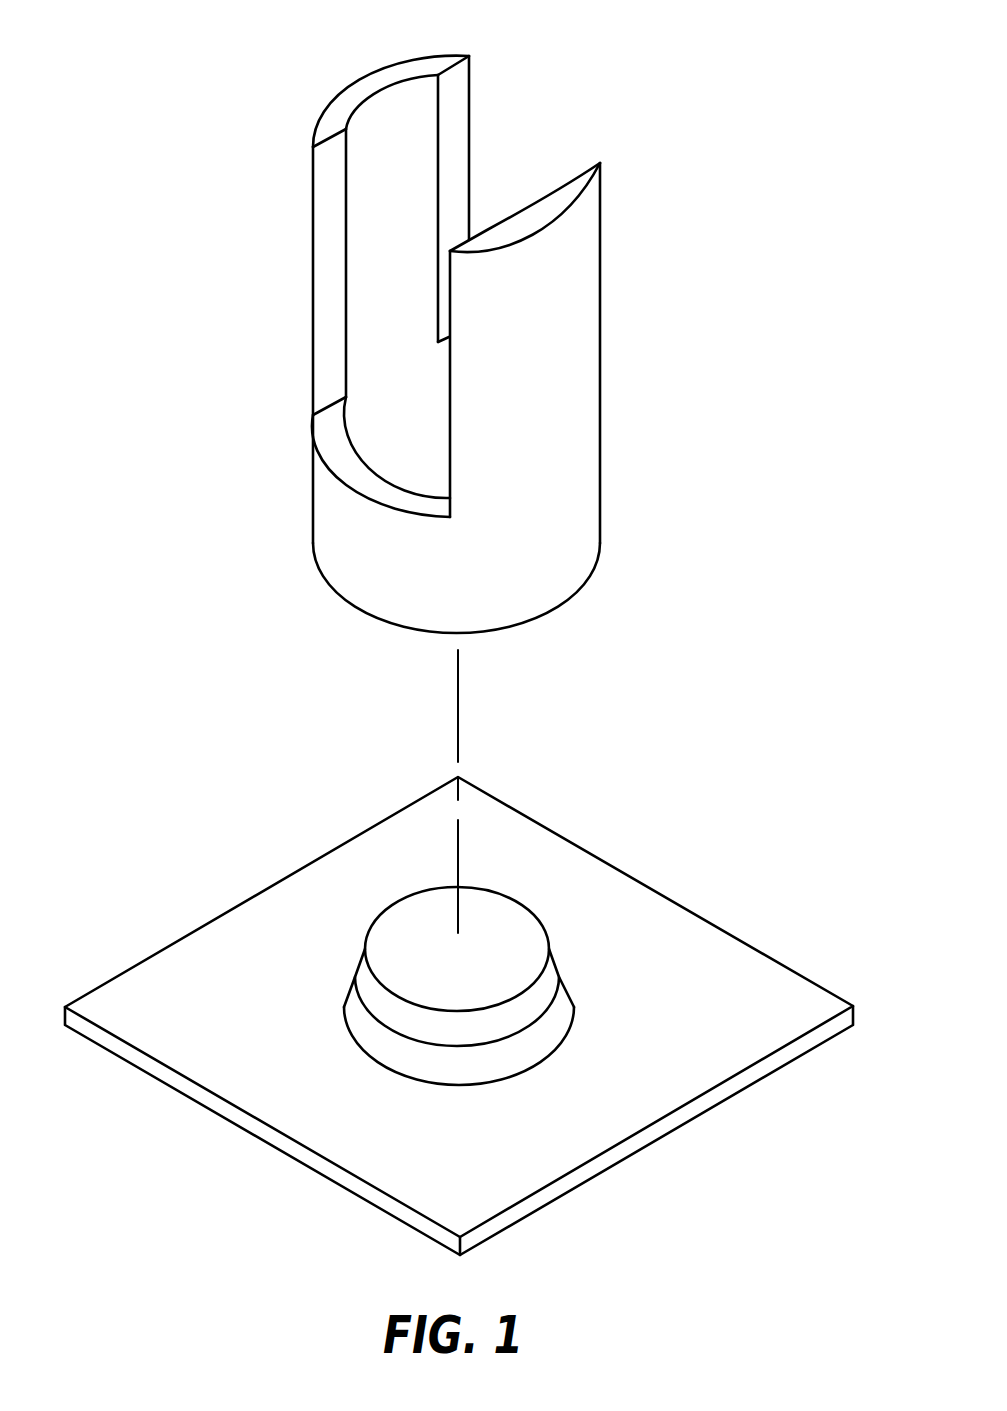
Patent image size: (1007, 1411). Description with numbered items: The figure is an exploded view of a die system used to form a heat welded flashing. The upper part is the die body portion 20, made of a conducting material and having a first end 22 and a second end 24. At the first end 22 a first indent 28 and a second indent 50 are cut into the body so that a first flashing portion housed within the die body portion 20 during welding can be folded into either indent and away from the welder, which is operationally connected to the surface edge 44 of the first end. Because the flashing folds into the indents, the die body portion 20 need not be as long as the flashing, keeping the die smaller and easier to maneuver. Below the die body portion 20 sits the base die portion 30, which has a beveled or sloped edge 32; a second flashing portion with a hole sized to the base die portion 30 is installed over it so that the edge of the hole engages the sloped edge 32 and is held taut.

The die body portion 20 is at (252, 100).
The first end 22 is at (506, 130).
The second end 24 is at (565, 511).
The indent portion 28 is at (373, 323).
The base die portion 30 is at (336, 908).
The sloped edge 32 is at (553, 978).
The surface edge 44 is at (565, 202).
The second indent 50 is at (513, 164).